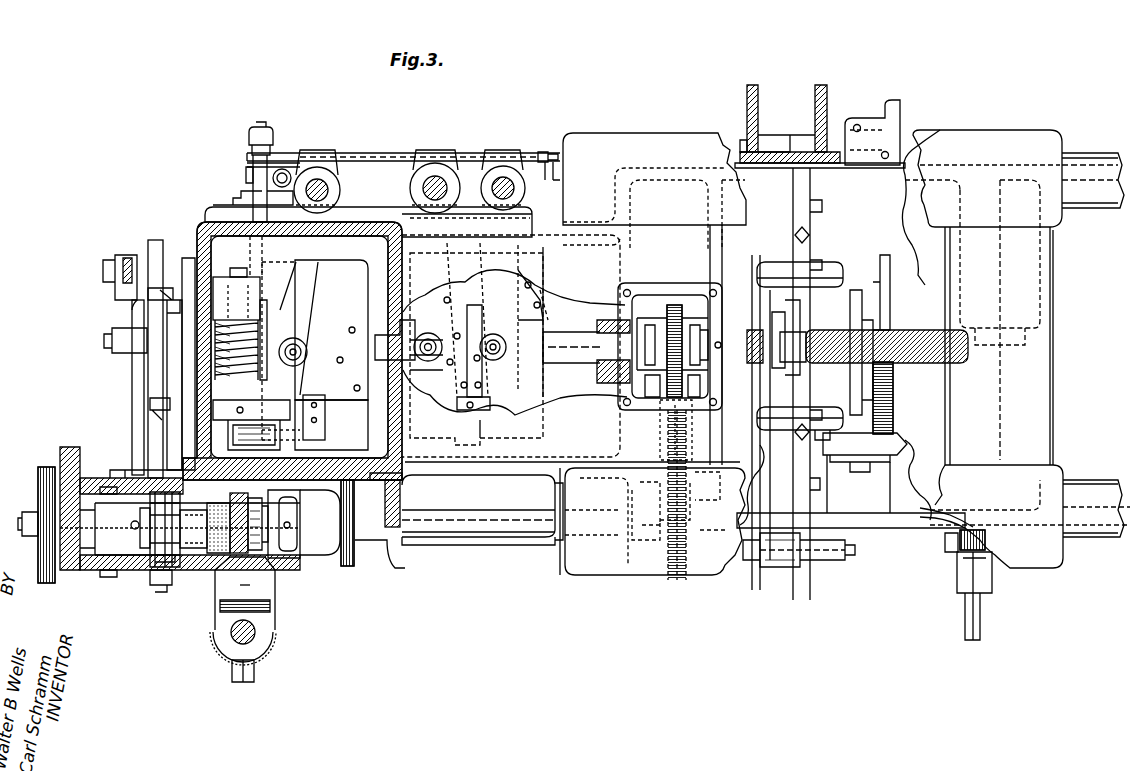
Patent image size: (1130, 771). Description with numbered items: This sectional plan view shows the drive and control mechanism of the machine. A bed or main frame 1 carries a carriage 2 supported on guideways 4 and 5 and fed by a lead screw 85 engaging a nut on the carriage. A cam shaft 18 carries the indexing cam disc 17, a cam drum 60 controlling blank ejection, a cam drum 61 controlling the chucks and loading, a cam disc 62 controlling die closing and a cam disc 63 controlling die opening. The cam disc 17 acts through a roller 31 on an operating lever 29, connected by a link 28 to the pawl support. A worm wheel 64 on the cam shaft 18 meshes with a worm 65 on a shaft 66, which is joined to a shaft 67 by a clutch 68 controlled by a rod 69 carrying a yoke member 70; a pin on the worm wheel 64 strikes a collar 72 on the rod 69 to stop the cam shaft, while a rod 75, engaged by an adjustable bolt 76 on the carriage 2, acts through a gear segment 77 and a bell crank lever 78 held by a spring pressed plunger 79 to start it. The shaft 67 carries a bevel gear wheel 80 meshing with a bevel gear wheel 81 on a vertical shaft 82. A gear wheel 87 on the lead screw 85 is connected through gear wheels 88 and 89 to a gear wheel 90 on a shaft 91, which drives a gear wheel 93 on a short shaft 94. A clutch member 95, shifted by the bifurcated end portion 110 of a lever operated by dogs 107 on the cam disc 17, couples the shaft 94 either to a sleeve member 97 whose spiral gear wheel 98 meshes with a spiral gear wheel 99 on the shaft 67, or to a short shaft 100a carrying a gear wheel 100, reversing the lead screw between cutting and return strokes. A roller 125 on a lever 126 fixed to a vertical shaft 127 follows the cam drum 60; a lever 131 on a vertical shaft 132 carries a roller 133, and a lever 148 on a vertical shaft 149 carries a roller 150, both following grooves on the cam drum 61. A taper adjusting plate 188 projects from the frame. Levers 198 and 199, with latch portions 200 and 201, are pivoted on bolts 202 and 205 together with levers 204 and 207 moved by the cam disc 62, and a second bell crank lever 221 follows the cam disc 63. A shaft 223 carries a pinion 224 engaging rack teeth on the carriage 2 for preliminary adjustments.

The bed or main frame 1 is at (1050, 420).
The carriage 2 is at (625, 565).
The guideway 4 is at (1105, 195).
The guideway 5 is at (1082, 490).
The cam disc 17 is at (156, 242).
The cam shaft 18 is at (590, 335).
The link 28 is at (128, 256).
The operating lever 29 is at (133, 398).
The roller 31 is at (140, 328).
The cam drum 60 is at (340, 440).
The cam drum 61 is at (540, 380).
The cam disc 62 is at (754, 298).
The cam disc 63 is at (891, 283).
The worm wheel 64 is at (238, 276).
The worm 65 is at (258, 330).
The shaft 66 is at (304, 417).
The shaft 67 is at (252, 676).
The clutch 68 is at (198, 438).
The rod 69 is at (268, 282).
The yoke member 70 is at (280, 435).
The lug or collar 72 is at (300, 352).
The rod 75 is at (382, 160).
The adjustable bolt 76 is at (543, 165).
The gear segment 77 is at (247, 163).
The bell crank lever 78 is at (246, 178).
The spring pressed plunger 79 is at (278, 165).
The bevel gear wheel 80 is at (266, 600).
The bevel gear wheel 81 is at (273, 630).
The vertical shaft 82 is at (255, 638).
The lead screw 85 is at (924, 330).
The gear wheel 87 is at (676, 305).
The gear wheel 88 is at (698, 385).
The gear wheel 89 is at (700, 440).
The gear wheel 90 is at (683, 575).
The shaft 91 is at (512, 540).
The gear wheel 93 is at (352, 570).
The short shaft 94 is at (392, 540).
The clutch member 95 is at (152, 560).
The sleeve member 97 is at (210, 590).
The spiral gear wheel 98 is at (250, 555).
The spiral gear wheel 99 is at (232, 549).
The gear wheel 100 is at (45, 467).
The short shaft 100a is at (22, 515).
The dogs 107 is at (172, 288).
The bifurcated end portion 110 is at (160, 592).
The roller 125 is at (295, 360).
The lever 126 is at (313, 276).
The vertical shaft 127 is at (320, 188).
The lever 131 is at (496, 322).
The vertical shaft 132 is at (438, 186).
The roller 133 is at (460, 300).
The lever 148 is at (508, 320).
The vertical shaft 149 is at (505, 185).
The roller 150 is at (492, 410).
The taper adjusting plate 188 is at (895, 125).
The lever 198 is at (815, 470).
The lever 199 is at (812, 225).
The latch portion 200 is at (785, 395).
The latch portion 201 is at (838, 283).
The bolt 202 is at (742, 560).
The second lever 204 is at (800, 398).
The bolt 205 is at (748, 152).
The lever 207 is at (790, 208).
The second bell crank lever 221 is at (860, 415).
The shaft 223 is at (980, 600).
The pinion 224 is at (950, 560).